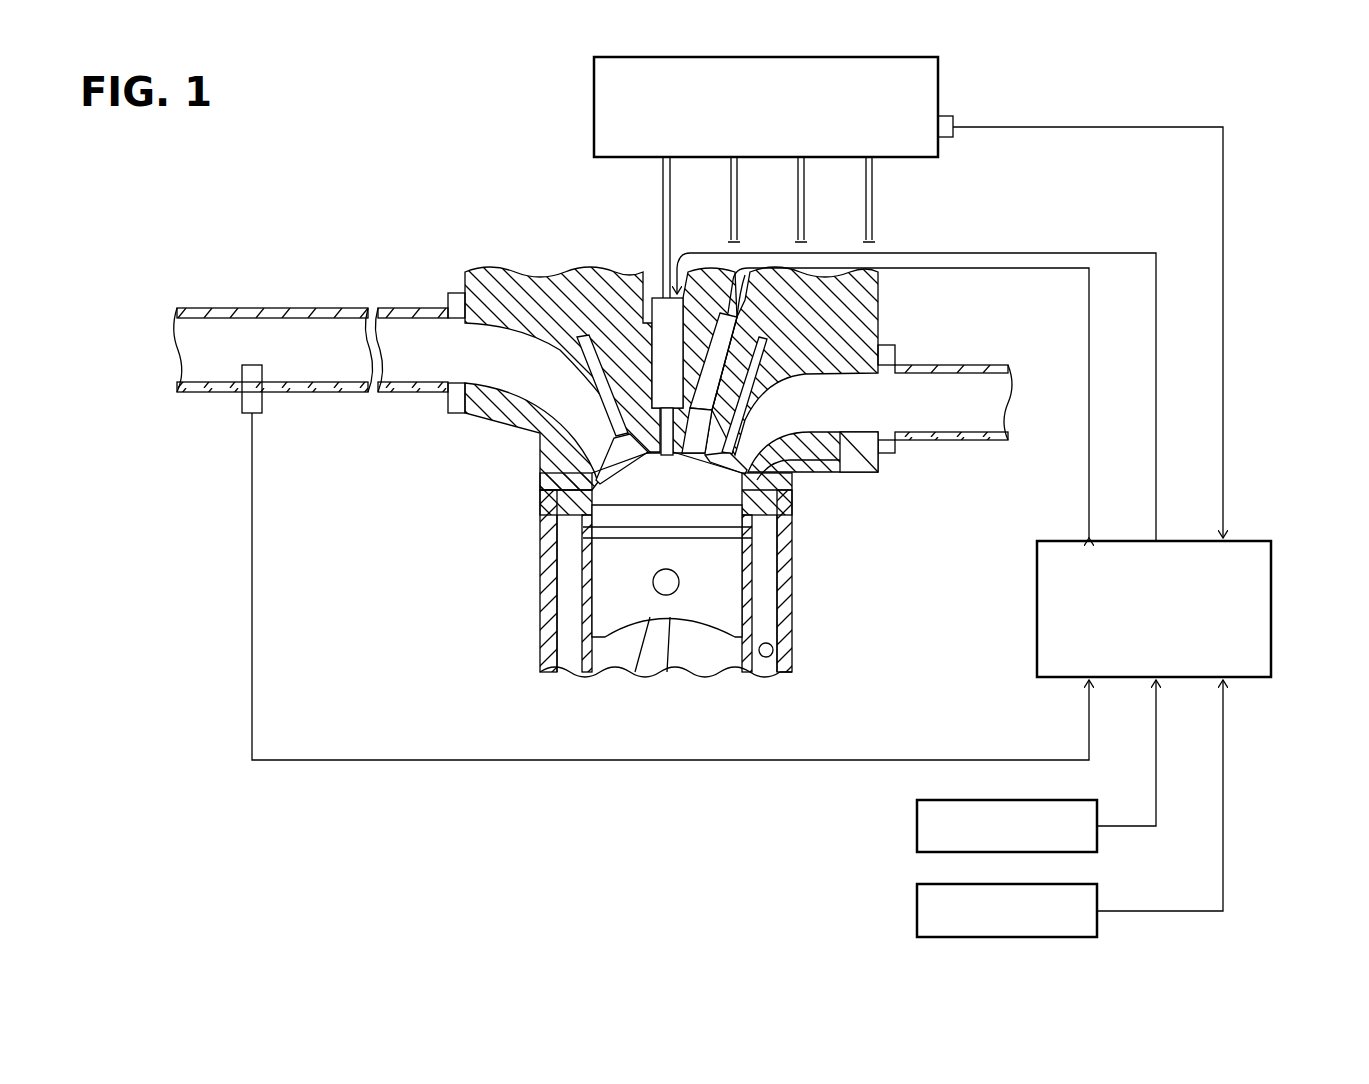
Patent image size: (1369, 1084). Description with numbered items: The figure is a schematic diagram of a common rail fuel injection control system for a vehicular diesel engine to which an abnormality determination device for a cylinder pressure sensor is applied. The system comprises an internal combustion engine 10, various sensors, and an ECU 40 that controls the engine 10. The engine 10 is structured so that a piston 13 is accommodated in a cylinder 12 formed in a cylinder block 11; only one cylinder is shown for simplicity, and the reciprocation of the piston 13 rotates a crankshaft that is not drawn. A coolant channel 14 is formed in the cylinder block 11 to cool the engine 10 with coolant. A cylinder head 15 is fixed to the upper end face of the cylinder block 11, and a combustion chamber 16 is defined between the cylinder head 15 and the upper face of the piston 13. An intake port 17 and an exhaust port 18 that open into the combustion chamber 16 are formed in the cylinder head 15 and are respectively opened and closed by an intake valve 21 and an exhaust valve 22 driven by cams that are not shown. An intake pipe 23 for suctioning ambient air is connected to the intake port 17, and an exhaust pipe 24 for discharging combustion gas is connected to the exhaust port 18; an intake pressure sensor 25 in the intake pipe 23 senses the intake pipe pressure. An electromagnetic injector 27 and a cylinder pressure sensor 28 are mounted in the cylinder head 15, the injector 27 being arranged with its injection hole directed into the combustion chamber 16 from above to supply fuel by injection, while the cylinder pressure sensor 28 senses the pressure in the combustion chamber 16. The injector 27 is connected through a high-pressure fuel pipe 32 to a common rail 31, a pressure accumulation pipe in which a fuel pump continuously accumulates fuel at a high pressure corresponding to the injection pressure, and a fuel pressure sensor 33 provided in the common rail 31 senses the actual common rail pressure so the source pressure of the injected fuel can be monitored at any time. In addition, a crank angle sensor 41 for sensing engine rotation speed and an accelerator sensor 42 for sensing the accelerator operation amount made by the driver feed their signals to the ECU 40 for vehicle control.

The internal combustion engine 10 is at (486, 188).
The cylinder block 11 is at (793, 587).
The cylinder 12 is at (730, 675).
The piston 13 is at (605, 592).
The coolant channel 14 is at (768, 642).
The cylinder head 15 is at (490, 403).
The combustion chamber 16 is at (543, 523).
The intake port 17 is at (557, 403).
The exhaust port 18 is at (840, 422).
The intake valve 21 is at (550, 453).
The exhaust valve 22 is at (793, 480).
The intake pipe 23 is at (324, 306).
The exhaust pipe 24 is at (968, 365).
The intake pressure sensor 25 is at (240, 404).
The electromagnetic injector 27 is at (650, 332).
The cylinder pressure sensor 28 is at (755, 333).
The common rail 31 is at (940, 72).
The high-pressure fuel pipe 32 is at (660, 197).
The fuel pressure sensor 33 is at (945, 138).
The ECU 40 is at (1272, 605).
The crank angle sensor 41 is at (917, 826).
The accelerator sensor 42 is at (917, 911).